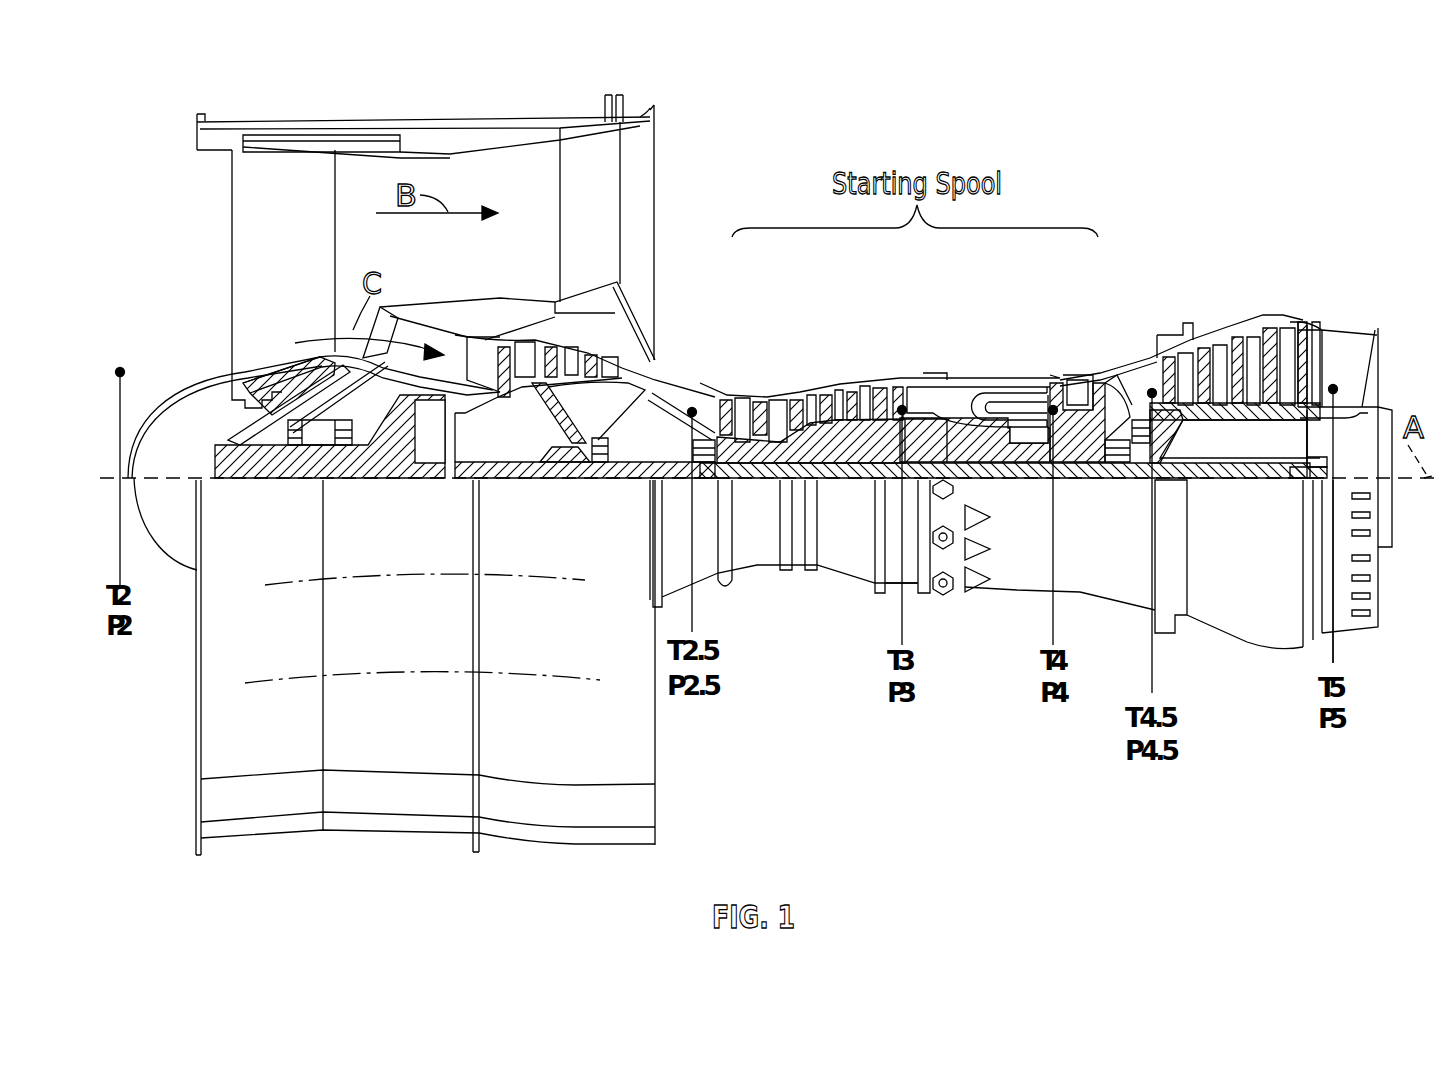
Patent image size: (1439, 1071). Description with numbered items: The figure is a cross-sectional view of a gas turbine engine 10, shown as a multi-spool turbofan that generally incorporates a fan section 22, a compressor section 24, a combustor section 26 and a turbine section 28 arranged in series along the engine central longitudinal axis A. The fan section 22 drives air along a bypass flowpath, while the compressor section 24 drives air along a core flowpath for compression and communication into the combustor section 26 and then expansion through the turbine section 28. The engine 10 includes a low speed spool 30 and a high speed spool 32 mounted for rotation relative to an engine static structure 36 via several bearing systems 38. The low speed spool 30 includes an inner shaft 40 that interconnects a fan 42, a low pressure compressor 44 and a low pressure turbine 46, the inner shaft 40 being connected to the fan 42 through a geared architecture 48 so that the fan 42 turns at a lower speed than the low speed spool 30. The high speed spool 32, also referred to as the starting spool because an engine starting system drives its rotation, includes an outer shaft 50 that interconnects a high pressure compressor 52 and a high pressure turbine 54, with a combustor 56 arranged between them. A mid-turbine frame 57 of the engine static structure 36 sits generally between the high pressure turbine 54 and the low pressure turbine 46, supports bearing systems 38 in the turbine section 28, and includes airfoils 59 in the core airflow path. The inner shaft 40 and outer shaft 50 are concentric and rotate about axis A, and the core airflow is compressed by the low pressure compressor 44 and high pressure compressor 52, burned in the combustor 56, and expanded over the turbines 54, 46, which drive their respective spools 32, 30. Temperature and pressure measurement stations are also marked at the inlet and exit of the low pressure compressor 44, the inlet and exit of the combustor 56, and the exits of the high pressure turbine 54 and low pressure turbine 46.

The gas turbine engine 10 is at (1303, 70).
The fan section 22 is at (336, 110).
The compressor section 24 is at (684, 356).
The combustor section 26 is at (993, 328).
The turbine section 28 is at (1186, 280).
The low speed spool 30 is at (858, 492).
The high speed spool 32 is at (930, 437).
The engine static structure 36 is at (893, 597).
The bearing systems 38 is at (578, 475).
The inner shaft 40 is at (640, 475).
The fan 42 is at (298, 288).
The low pressure compressor 44 is at (570, 360).
The low pressure turbine 46 is at (1232, 333).
The geared architecture 48 is at (431, 477).
The outer shaft 50 is at (1008, 472).
The high pressure compressor 52 is at (800, 392).
The high pressure turbine 54 is at (1077, 375).
The combustor 56 is at (1000, 410).
The mid-turbine frame 57 is at (1126, 362).
The airfoils 59 is at (1170, 420).